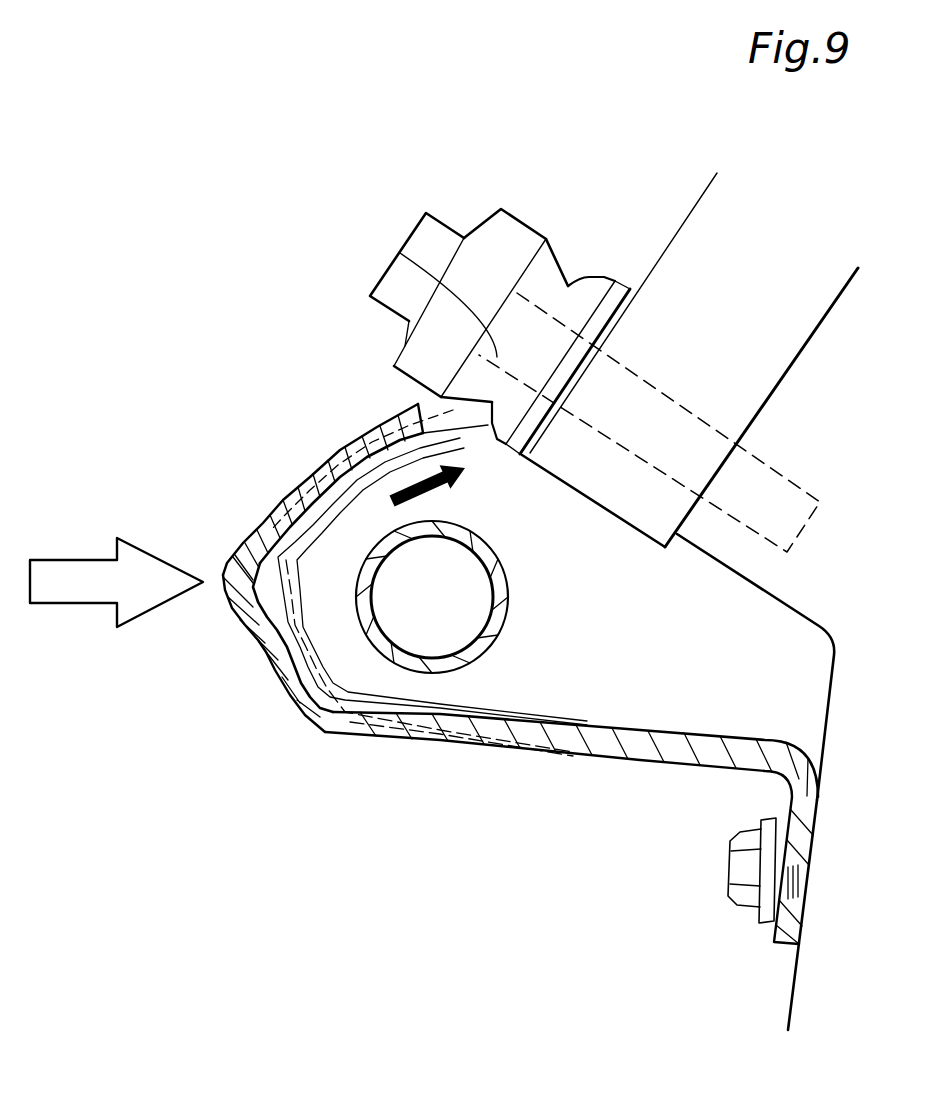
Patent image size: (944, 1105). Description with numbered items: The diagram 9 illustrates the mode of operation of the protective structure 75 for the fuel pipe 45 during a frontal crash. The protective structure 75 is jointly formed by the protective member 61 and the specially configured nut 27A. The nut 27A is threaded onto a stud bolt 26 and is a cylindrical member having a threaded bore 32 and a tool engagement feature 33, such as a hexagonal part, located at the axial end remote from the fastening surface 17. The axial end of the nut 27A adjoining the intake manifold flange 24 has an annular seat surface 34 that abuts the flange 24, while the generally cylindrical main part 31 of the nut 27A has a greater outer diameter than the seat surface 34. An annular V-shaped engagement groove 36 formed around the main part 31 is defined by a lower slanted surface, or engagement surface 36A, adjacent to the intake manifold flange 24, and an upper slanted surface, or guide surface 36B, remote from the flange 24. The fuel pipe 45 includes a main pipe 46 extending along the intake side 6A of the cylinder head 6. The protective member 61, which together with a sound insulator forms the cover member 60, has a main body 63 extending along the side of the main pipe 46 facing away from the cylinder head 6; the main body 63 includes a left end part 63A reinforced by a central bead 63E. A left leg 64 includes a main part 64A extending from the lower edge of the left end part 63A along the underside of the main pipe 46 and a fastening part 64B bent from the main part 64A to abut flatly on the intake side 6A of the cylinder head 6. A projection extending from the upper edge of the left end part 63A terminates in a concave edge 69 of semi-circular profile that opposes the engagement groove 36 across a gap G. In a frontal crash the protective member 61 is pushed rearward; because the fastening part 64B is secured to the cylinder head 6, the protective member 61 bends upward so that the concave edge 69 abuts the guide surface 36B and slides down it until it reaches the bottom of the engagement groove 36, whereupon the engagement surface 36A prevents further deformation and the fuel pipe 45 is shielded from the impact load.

The mounting structure 9 is at (737, 153).
The cylinder head 6 is at (803, 1002).
The intake side 6A is at (828, 700).
The fastening surface 17 is at (827, 313).
The intake manifold flange 24 is at (698, 202).
The stud bolt 26 is at (763, 457).
The nut 27A is at (421, 199).
The main part 31 is at (505, 212).
The threaded bore 32 is at (393, 248).
The tool engagement feature 33 is at (386, 282).
The annular seat surface 34 is at (611, 324).
The engagement groove 36 is at (628, 180).
The lower slanted surface (engagement surface) 36A is at (582, 278).
The upper slanted surface (guide surface) 36B is at (564, 280).
The fuel pipe 45 is at (505, 552).
The main pipe 46 is at (498, 620).
The cover member 60 is at (362, 775).
The protective member 61 is at (312, 735).
The main body 63 is at (266, 648).
The left end part 63A is at (280, 683).
The bead 63E is at (227, 565).
The left leg 64 is at (590, 765).
The main part 64A is at (540, 742).
The fastening part 64B is at (777, 933).
The concave edge 69 is at (414, 402).
The protective structure 75 is at (280, 352).
The gap G is at (455, 423).